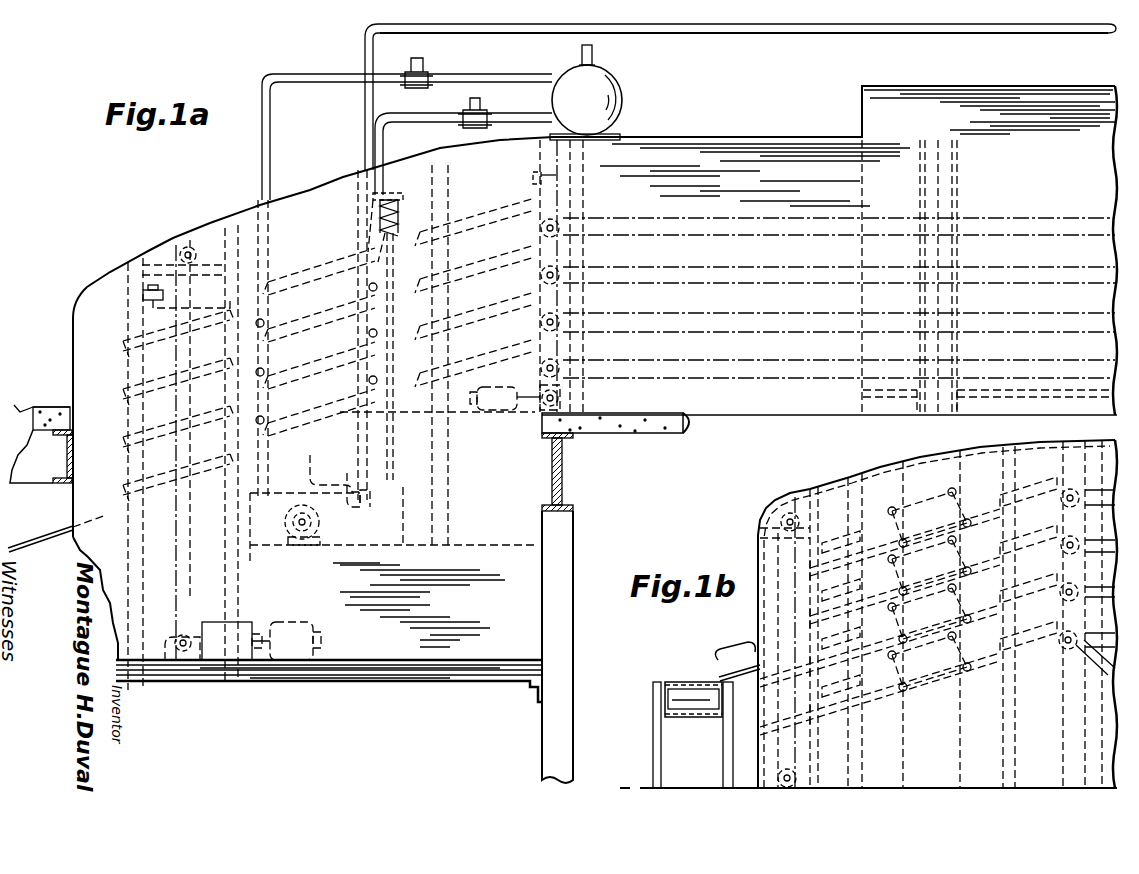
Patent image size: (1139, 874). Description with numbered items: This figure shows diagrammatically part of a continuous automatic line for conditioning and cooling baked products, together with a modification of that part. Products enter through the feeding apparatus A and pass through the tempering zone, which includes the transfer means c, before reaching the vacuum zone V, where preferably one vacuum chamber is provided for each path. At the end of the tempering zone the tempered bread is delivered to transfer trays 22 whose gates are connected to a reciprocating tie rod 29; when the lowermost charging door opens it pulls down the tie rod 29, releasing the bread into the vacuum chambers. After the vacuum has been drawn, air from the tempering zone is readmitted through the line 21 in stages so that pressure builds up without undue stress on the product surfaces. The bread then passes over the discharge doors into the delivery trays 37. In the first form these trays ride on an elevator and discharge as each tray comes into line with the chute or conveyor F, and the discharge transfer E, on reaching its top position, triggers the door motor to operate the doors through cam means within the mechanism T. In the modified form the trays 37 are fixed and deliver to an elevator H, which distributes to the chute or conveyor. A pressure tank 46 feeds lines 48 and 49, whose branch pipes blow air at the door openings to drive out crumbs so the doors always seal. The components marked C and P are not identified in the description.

In FIG. 1A, the line 21 is at (803, 33).
In FIG. 1A, the line 48 is at (337, 74).
In FIG. 1A, the line 49 is at (450, 120).
In FIG. 1A, the pressure tank 46 is at (623, 97).
In FIG. 1A, the tie rod 29 is at (48, 412).
In FIG. 1B, the delivery trays 37 is at (841, 553).
In FIG. 1B, the transfer trays 22 is at (1026, 510).
In FIG. 1A, the discharge transfer E is at (182, 254).
In FIG. 1A, the vacuum zone V is at (356, 337).
In FIG. 1A, the transfer means c is at (399, 318).
In FIG. 1B, the transfer means c is at (880, 611).
In FIG. 1A, the motor C is at (320, 524).
In FIG. 1A, the mechanism T is at (394, 506).
In FIG. 1A, the pump P is at (515, 397).
In FIG. 1A, the feeding apparatus A is at (243, 641).
In FIG. 1A, the chute or conveyor F is at (30, 540).
In FIG. 1B, the elevator H is at (722, 715).